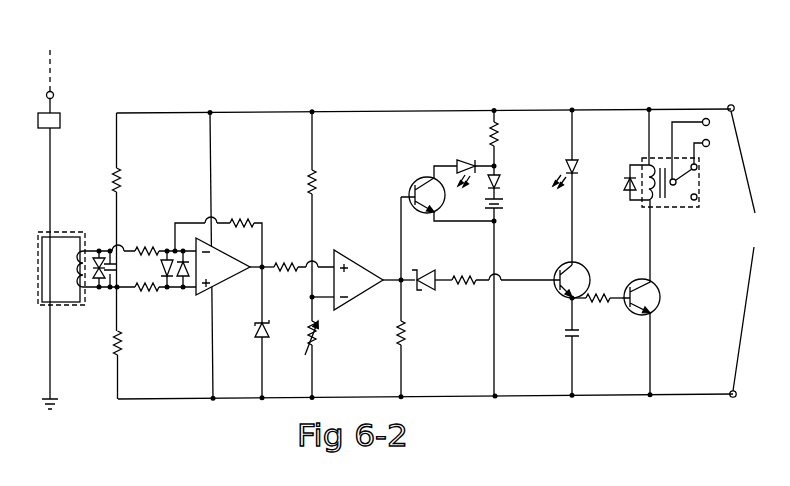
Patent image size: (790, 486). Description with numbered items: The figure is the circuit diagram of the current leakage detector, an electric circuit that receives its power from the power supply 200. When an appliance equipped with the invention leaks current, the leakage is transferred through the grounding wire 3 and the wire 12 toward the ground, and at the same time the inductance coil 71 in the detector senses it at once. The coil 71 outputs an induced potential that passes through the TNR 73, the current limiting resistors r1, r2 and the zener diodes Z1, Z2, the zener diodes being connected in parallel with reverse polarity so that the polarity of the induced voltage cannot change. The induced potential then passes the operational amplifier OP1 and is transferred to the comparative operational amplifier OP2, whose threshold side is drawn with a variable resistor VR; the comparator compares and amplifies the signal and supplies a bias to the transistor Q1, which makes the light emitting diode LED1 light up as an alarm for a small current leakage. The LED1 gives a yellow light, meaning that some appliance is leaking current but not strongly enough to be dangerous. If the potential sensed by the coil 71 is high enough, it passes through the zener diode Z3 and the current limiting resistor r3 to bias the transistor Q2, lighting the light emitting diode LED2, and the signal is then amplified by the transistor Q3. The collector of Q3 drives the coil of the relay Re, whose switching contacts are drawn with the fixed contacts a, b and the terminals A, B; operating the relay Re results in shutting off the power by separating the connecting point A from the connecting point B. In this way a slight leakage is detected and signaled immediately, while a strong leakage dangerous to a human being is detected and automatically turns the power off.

The grounding wire 3 is at (50, 67).
The wire 12 is at (51, 204).
The inductance coil 71 is at (78, 291).
The TNR 73 is at (99, 255).
The current limiting resistor r1 is at (143, 234).
The current limiting resistor r2 is at (143, 297).
The zener diode Z1 is at (171, 268).
The zener diode Z2 is at (168, 256).
The operational amplifier OP1 is at (225, 285).
The comparative operational amplifier OP2 is at (336, 243).
The variable resistor VR is at (318, 343).
The zener diode Z3 is at (427, 292).
The current limiting resistor r3 is at (453, 279).
The transistor Q1 is at (420, 182).
The light emitting diode LED1 is at (469, 160).
The light emitting diode LED2 is at (577, 148).
The transistor Q2 is at (588, 272).
The transistor Q3 is at (660, 295).
The relay Re is at (667, 212).
The connecting point A is at (698, 145).
The connecting point B is at (709, 148).
The relay contact a is at (700, 167).
The relay contact b is at (701, 197).
The power supply 200 is at (756, 251).